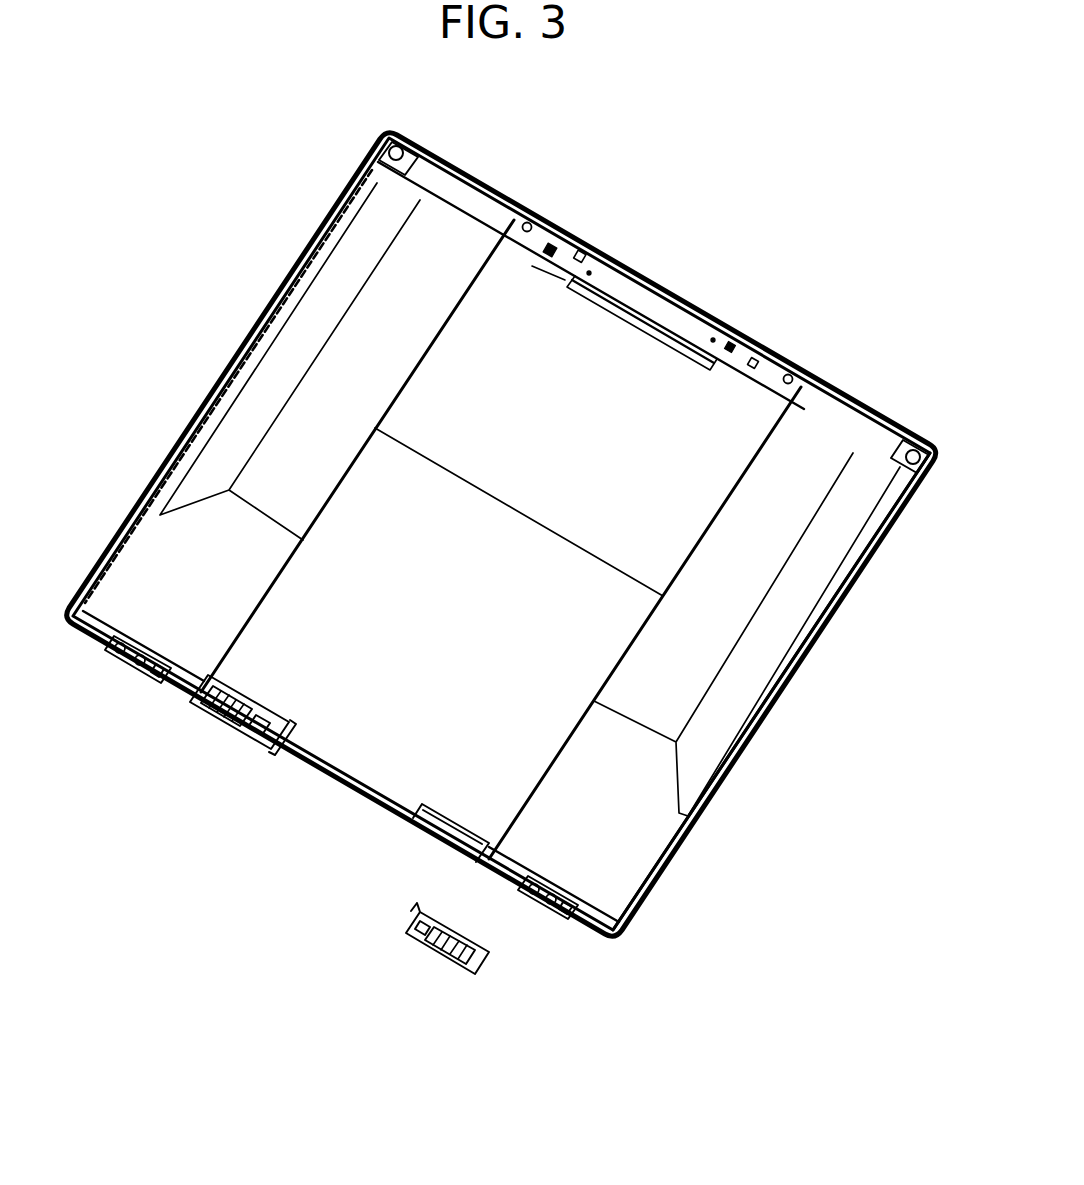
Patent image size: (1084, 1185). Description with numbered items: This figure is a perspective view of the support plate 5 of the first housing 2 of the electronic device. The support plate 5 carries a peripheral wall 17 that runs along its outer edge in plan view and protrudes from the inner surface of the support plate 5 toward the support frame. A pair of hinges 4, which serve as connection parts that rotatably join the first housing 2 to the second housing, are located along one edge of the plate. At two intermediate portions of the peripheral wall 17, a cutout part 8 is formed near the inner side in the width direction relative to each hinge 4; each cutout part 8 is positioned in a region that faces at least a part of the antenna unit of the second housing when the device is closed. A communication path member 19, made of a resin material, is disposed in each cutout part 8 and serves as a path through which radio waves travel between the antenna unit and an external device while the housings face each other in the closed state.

The first housing 2 is at (820, 257).
The hinge 4 is at (127, 673).
The support plate 5 is at (275, 318).
The cutout part 8 is at (256, 742).
The peripheral wall 17 is at (677, 843).
The communication path member 19 is at (228, 733).